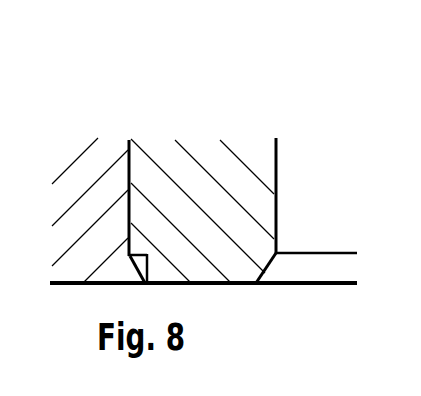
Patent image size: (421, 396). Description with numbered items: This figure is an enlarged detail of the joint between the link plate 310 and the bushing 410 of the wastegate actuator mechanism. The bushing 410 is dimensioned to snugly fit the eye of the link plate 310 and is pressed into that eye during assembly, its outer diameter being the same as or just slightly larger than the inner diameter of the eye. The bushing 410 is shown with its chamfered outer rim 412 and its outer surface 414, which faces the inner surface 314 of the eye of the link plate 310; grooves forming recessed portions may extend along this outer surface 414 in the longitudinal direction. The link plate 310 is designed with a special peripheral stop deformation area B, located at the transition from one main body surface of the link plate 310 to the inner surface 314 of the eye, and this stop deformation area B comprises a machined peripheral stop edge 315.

The link plate 310 is at (92, 165).
The chamfered outer rim 412 is at (128, 270).
The outer surface 414 is at (127, 155).
The inner surface 314 is at (131, 142).
The machined peripheral stop edge 315 is at (128, 270).
The bushing 410 is at (252, 152).
The stop deformation area B is at (148, 218).